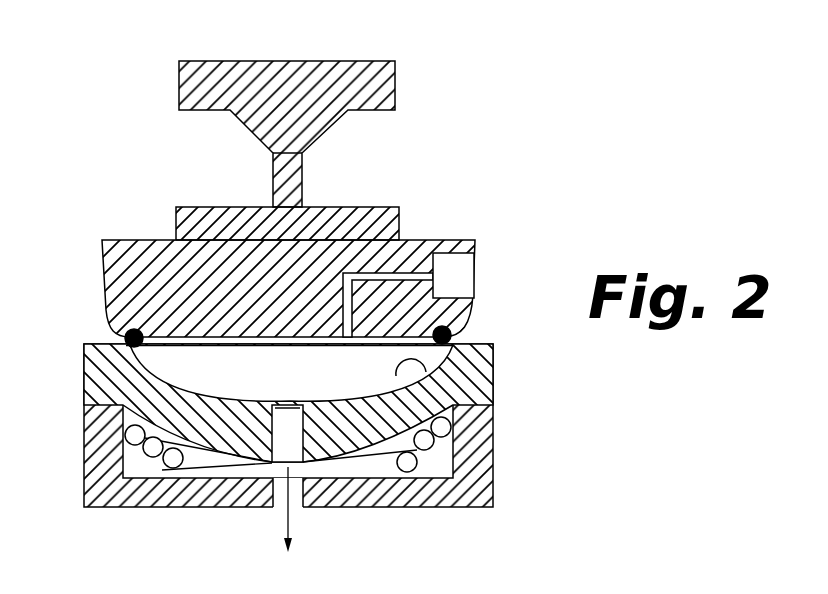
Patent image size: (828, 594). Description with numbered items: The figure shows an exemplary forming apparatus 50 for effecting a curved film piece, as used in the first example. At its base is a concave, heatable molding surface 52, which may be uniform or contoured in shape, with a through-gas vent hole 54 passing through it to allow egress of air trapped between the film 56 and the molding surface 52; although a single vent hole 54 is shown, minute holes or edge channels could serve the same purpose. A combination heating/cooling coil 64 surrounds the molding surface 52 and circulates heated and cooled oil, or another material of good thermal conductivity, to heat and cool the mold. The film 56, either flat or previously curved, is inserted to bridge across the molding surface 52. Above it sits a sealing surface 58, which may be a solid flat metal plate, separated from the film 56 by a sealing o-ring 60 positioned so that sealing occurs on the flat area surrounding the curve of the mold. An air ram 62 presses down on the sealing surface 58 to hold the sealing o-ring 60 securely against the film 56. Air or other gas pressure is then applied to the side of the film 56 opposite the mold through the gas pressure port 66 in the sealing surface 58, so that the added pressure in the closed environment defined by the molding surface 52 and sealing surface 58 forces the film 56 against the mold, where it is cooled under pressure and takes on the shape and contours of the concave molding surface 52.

The forming apparatus 50 is at (151, 31).
The molding surface 52 is at (415, 365).
The gas vent hole 54 is at (296, 507).
The film 56 is at (86, 344).
The sealing surface 58 is at (492, 216).
The sealing o-ring 60 is at (452, 338).
The air ram 62 is at (395, 80).
The heating/cooling coil 64 is at (140, 458).
The gas pressure port 66 is at (434, 288).